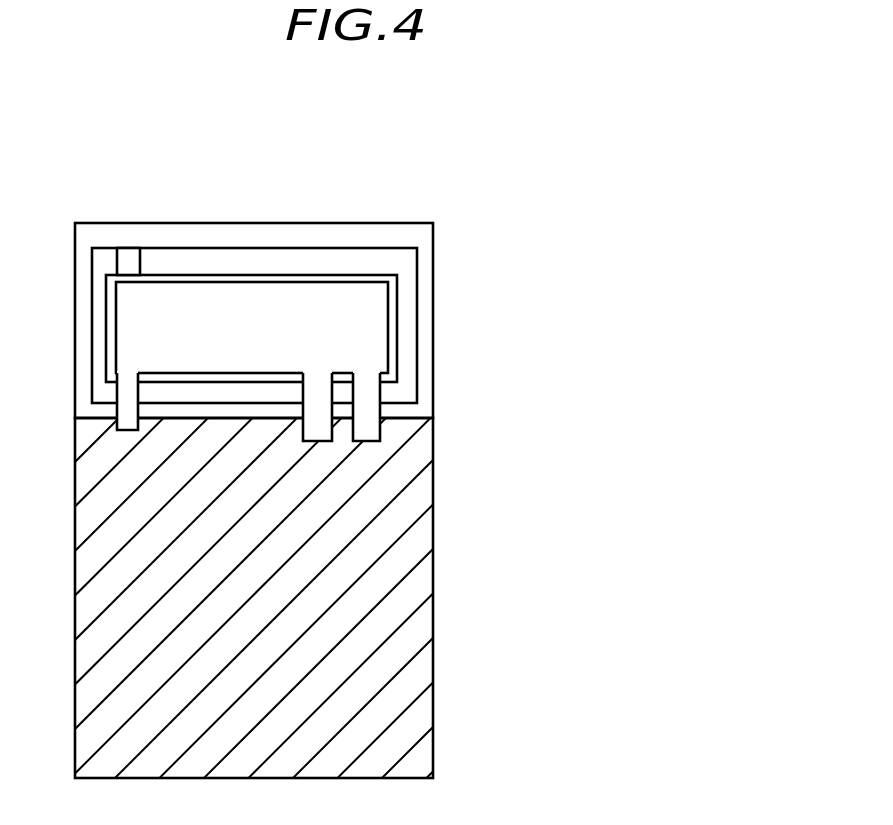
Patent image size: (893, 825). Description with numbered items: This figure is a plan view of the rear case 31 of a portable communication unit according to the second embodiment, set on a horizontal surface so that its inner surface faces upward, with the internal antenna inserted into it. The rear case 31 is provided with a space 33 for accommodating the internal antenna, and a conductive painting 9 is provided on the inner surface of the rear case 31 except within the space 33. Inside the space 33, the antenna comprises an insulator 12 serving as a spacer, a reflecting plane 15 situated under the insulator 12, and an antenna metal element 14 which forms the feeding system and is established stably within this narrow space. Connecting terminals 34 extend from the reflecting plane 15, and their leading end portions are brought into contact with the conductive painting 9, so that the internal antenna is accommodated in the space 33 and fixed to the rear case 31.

The antenna metal element 14 is at (130, 250).
The space 33 is at (350, 258).
The insulator 12 is at (398, 299).
The reflecting plane 15 is at (375, 342).
The connecting terminal 34 is at (127, 432).
The rear case 31 is at (433, 583).
The conductive painting 9 is at (350, 697).